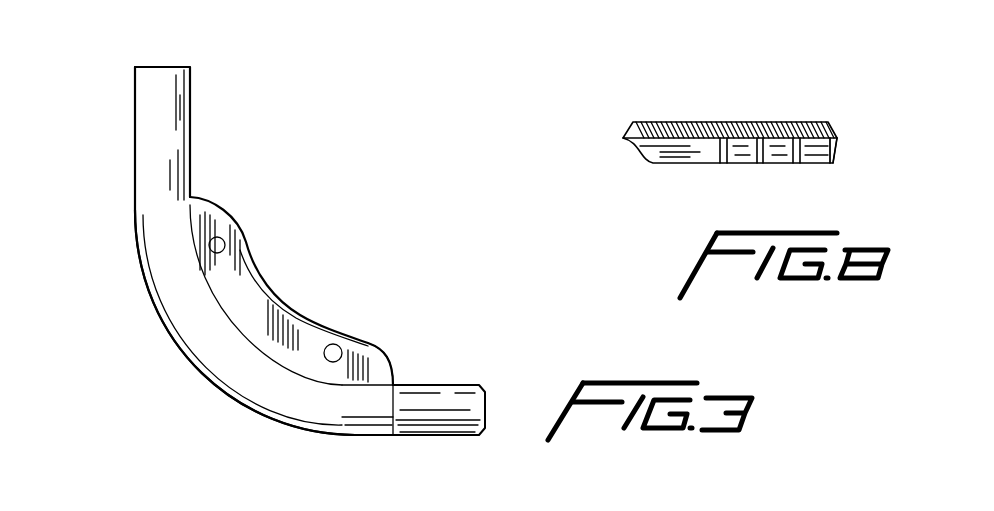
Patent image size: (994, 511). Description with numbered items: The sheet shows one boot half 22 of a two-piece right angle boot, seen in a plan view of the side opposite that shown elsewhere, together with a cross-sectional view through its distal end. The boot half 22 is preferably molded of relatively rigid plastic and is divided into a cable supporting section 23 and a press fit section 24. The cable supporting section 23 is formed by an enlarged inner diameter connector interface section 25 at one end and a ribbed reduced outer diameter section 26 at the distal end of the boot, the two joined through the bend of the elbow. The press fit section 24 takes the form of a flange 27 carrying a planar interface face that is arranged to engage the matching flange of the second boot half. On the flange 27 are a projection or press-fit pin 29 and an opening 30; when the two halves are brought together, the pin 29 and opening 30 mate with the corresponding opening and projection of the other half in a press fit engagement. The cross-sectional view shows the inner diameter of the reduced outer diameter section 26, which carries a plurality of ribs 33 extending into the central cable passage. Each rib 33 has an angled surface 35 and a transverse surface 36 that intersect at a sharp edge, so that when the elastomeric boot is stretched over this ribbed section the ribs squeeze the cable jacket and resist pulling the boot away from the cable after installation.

In FIG. 3, the boot half 22 is at (180, 145).
In FIG. 3, the cable supporting section 23 is at (206, 350).
In FIG. 3, the press fit section 24 is at (300, 330).
In FIG. 3, the connector interface section 25 is at (148, 101).
In FIG. 3, the ribbed reduced outer diameter section 26 is at (455, 425).
In FIG. 6, the ribbed reduced outer diameter section 26 is at (703, 122).
In FIG. 3, the flange 27 is at (380, 353).
In FIG. 3, the press-fit pin 29 is at (336, 360).
In FIG. 3, the opening 30 is at (224, 243).
In FIG. 6, the ribs 33 is at (796, 164).
In FIG. 6, the angled surface 35 is at (838, 145).
In FIG. 6, the transverse surface 36 is at (775, 122).